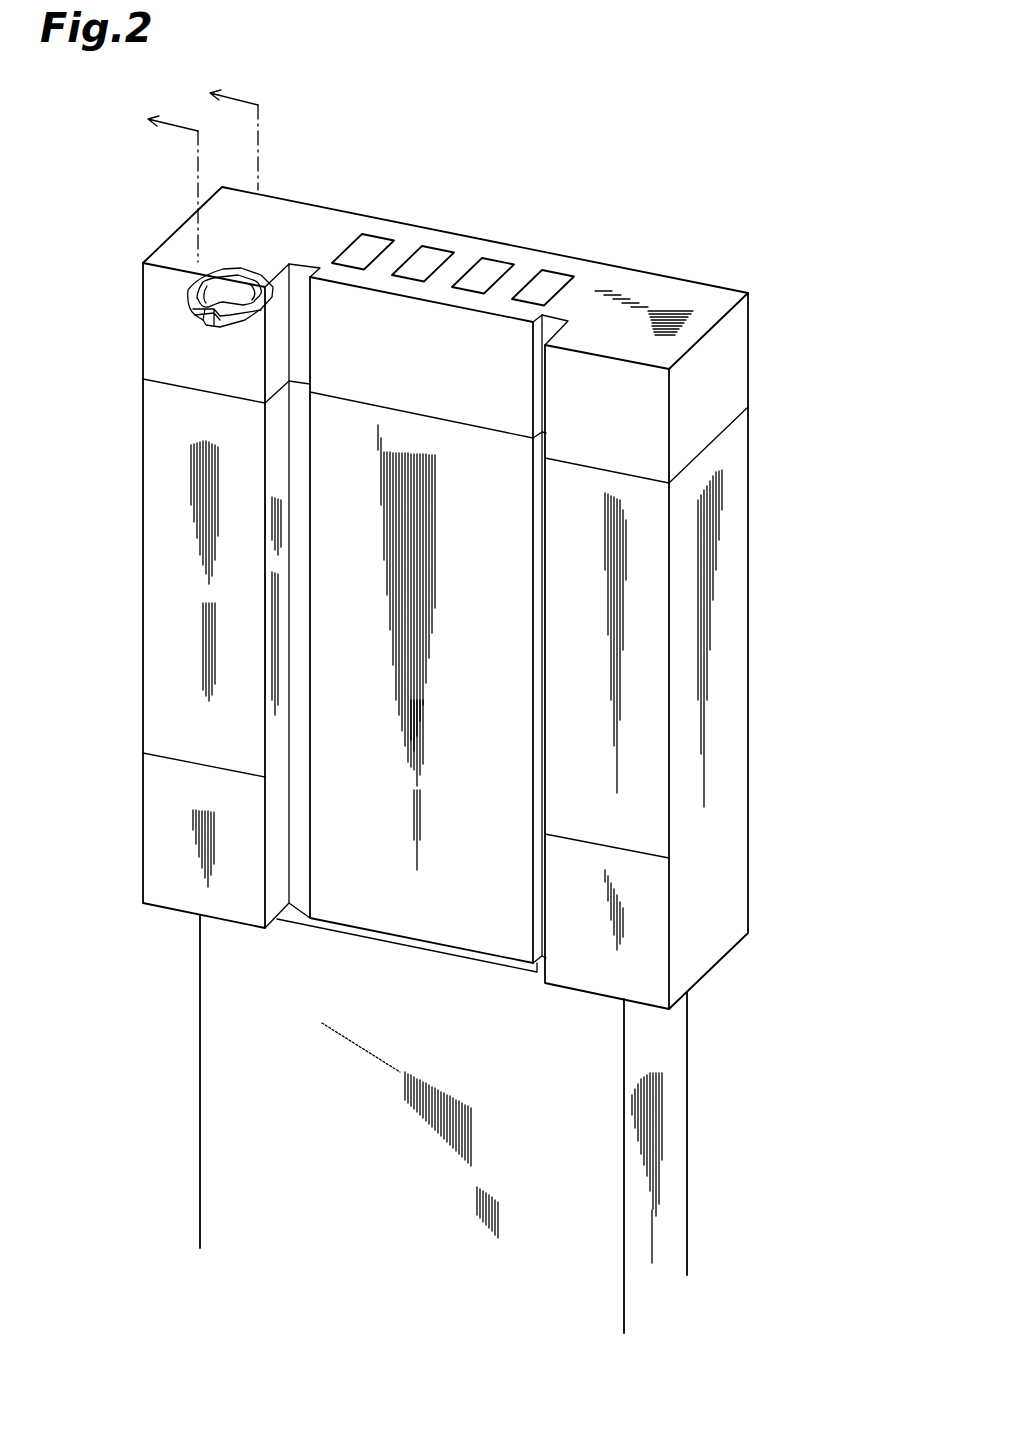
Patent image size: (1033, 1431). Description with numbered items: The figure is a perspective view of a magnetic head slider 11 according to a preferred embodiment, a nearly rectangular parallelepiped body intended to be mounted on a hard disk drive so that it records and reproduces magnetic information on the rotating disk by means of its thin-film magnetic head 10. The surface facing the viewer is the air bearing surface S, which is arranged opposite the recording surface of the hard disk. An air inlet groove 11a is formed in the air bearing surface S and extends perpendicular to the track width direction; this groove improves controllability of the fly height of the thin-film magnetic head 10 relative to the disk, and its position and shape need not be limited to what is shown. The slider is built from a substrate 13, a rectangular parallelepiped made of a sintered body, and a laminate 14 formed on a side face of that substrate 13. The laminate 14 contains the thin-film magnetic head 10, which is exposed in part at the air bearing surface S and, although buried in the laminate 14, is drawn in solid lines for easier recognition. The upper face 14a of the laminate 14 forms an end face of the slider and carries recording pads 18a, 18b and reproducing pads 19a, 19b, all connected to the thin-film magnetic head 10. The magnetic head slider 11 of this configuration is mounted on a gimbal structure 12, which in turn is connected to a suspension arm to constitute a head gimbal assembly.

The thin-film magnetic head 10 is at (186, 242).
The magnetic head slider 11 is at (729, 221).
The air inlet groove 11a is at (456, 335).
The gimbal structure 12 is at (660, 1058).
The substrate 13 is at (715, 678).
The laminate 14 is at (738, 325).
The upper face of the laminate 14a is at (670, 310).
The recording pad 18a is at (370, 253).
The recording pad 18b is at (547, 288).
The reproducing pad 19a is at (428, 265).
The reproducing pad 19b is at (491, 276).
The air bearing surface S is at (160, 530).